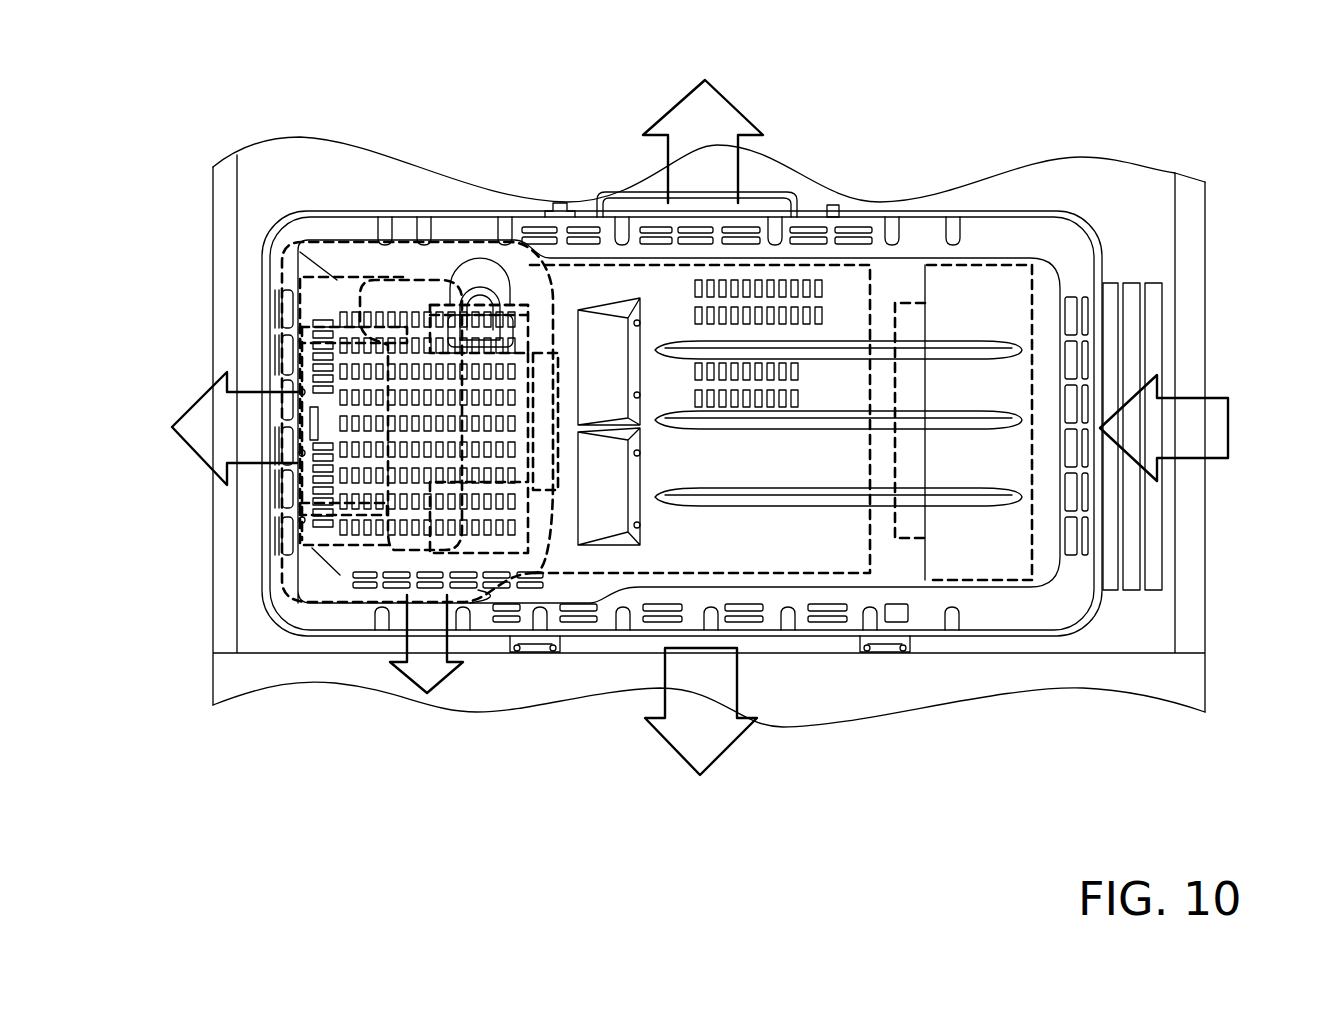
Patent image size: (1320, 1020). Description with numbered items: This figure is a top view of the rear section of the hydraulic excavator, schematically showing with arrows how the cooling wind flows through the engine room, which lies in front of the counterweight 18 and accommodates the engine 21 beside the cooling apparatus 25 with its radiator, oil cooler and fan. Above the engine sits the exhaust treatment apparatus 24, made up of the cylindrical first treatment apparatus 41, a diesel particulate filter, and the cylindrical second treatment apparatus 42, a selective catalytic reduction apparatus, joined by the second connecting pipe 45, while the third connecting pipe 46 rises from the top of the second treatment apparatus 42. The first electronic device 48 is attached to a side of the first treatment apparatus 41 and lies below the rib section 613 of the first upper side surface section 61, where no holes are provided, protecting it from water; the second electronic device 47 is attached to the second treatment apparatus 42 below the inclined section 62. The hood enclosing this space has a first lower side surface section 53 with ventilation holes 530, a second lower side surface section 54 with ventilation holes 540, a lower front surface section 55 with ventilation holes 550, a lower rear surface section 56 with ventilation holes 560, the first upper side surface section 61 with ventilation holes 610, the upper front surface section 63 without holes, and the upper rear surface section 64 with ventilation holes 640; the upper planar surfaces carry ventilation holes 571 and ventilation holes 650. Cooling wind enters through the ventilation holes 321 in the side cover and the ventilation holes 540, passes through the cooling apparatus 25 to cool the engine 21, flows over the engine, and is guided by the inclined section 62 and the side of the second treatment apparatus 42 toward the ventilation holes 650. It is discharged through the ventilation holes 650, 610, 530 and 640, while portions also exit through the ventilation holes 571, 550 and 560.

The counterweight 18 is at (938, 688).
The engine 21 is at (858, 265).
The exhaust treatment apparatus 24 is at (347, 252).
The cooling apparatus 25 is at (982, 265).
The first treatment apparatus 41 is at (313, 550).
The second treatment apparatus 42 is at (455, 560).
The second connecting pipe 45 is at (413, 225).
The third connecting pipe 46 is at (481, 325).
The second electronic device 47 is at (612, 300).
The first electronic device 48 is at (300, 413).
The first lower side surface section 53 is at (278, 322).
The second lower side surface section 54 is at (1077, 590).
The lower front surface section 55 is at (643, 228).
The lower rear surface section 56 is at (645, 612).
The first upper side surface section 61 is at (314, 468).
The inclined section 62 is at (560, 528).
The upper front surface section 63 is at (428, 250).
The upper rear surface section 64 is at (478, 592).
The ventilation holes 321 is at (1132, 322).
The ventilation holes 530 is at (283, 352).
The ventilation holes 540 is at (1082, 357).
The ventilation holes 550 is at (738, 238).
The ventilation holes 560 is at (829, 618).
The ventilation holes 571 is at (745, 383).
The ventilation holes 610 is at (302, 327).
The rib section 613 is at (310, 423).
The ventilation holes 640 is at (403, 580).
The ventilation holes 650 is at (549, 350).